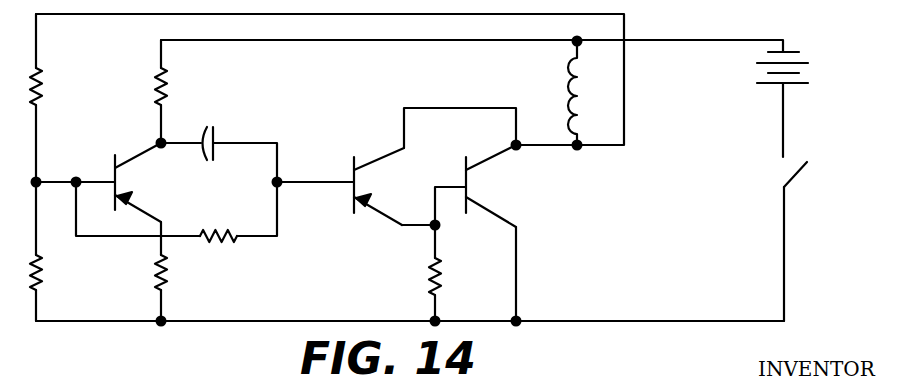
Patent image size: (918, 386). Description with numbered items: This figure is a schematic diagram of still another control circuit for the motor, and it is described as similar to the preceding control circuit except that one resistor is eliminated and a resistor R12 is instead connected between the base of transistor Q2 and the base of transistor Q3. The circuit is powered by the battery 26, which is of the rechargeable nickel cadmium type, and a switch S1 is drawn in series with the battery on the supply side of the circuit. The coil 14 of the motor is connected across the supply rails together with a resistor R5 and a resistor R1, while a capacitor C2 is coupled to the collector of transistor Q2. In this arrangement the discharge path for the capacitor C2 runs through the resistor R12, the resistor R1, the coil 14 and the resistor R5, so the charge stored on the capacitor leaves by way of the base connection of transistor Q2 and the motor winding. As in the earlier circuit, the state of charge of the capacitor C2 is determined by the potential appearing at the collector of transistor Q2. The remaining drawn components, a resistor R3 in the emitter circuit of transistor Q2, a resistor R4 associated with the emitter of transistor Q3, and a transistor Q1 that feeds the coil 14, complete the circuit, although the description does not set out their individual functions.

The resistor R1 is at (43, 77).
The resistor R5 is at (168, 77).
The resistor R3 is at (167, 281).
The resistor R12 is at (222, 245).
The resistor R4 is at (442, 265).
The capacitor C2 is at (205, 167).
The transistor Q2 is at (124, 182).
The transistor Q3 is at (362, 183).
The transistor Q1 is at (474, 186).
The coil 14 is at (567, 79).
The battery 26 is at (809, 79).
The switch S1 is at (796, 178).